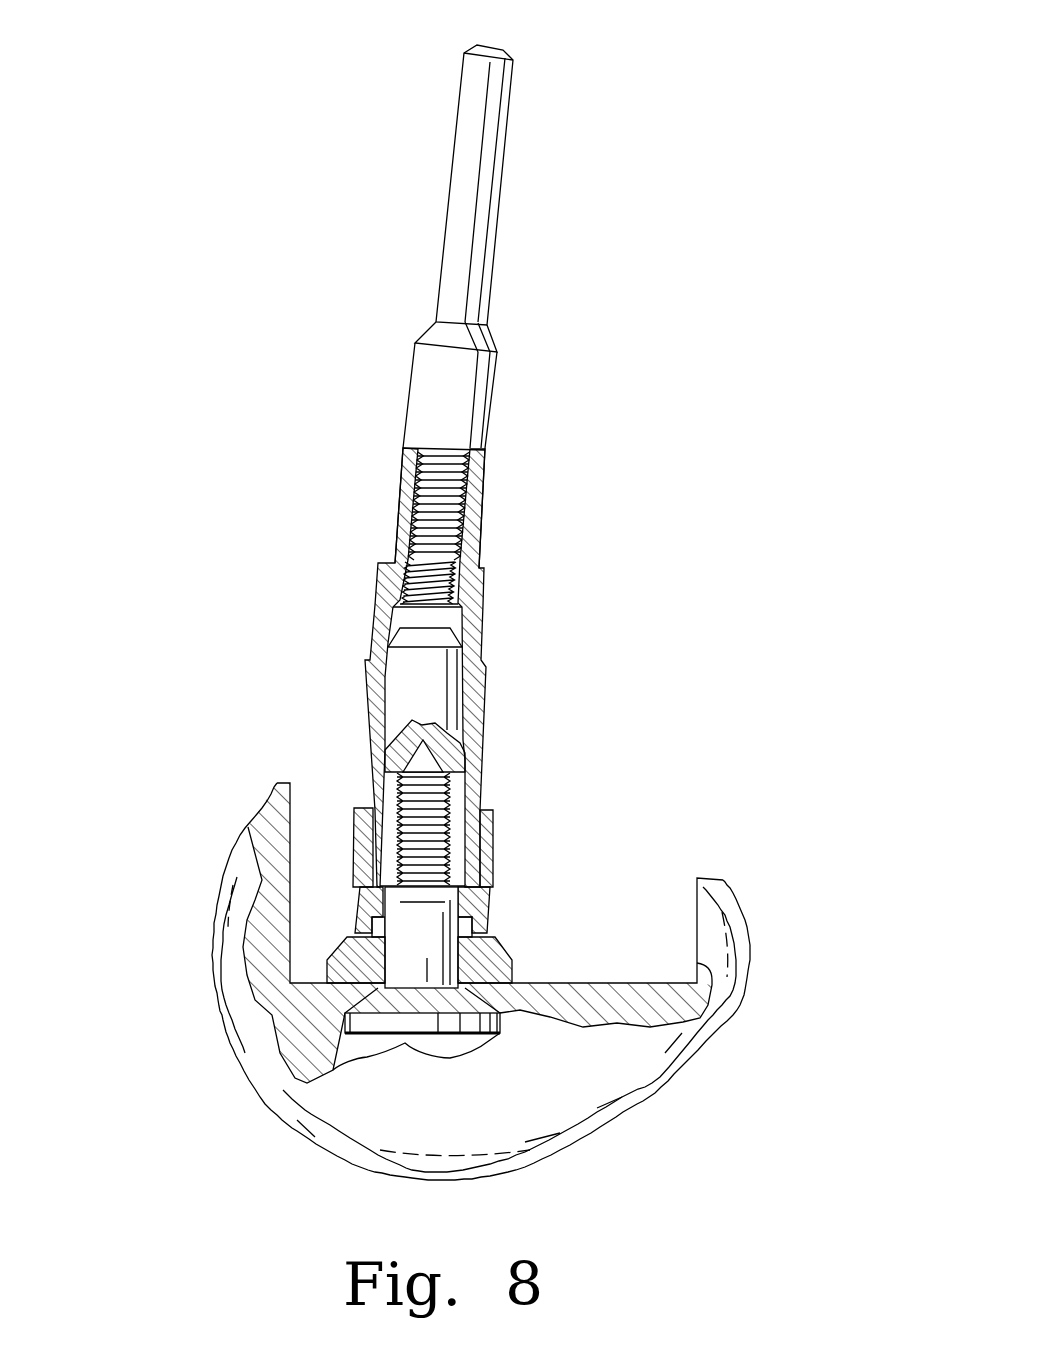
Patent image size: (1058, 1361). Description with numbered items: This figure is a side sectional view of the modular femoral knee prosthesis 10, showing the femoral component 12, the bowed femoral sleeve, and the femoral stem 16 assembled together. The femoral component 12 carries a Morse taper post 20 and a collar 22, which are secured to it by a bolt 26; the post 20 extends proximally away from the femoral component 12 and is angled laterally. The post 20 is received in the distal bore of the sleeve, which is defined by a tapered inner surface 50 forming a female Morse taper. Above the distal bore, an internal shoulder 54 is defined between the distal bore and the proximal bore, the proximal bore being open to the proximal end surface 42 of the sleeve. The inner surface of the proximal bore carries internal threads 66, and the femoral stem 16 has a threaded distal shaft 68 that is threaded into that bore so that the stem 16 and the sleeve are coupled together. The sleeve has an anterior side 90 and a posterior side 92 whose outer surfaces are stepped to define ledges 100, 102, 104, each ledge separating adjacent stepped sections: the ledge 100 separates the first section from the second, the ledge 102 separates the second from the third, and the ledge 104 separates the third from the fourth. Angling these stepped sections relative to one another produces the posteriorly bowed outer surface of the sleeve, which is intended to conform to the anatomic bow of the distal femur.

The modular femoral knee prosthesis 10 is at (472, 560).
The femoral component 12 is at (193, 966).
The femoral stem 16 is at (516, 214).
The Morse taper post 20 is at (453, 712).
The collar 22 is at (495, 938).
The bolt 26 is at (407, 1027).
The proximal end surface 42 is at (446, 615).
The tapered inner surface 50 is at (386, 689).
The internal shoulder 54 is at (388, 612).
The internal threads 66 is at (473, 564).
The threaded distal shaft 68 is at (468, 487).
The anterior side 90 is at (401, 491).
The posterior side 92 is at (473, 845).
The ledge 100 is at (490, 807).
The ledge 102 is at (484, 665).
The ledge 104 is at (394, 562).